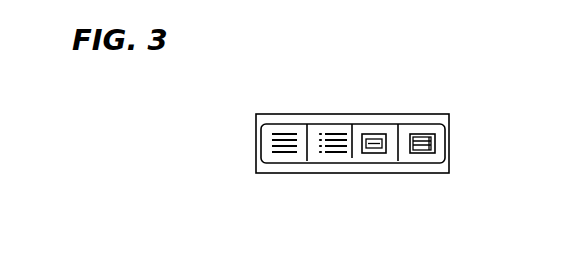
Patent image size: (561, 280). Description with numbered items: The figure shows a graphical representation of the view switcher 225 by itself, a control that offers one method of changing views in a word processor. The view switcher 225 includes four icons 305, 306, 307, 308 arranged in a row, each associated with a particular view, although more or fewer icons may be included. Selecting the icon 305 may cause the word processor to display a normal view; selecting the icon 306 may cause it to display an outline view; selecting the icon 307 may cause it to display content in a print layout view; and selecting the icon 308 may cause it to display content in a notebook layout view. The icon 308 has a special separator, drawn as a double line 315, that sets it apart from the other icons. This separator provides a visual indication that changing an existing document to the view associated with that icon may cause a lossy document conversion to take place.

The view switcher 225 is at (330, 92).
The double line 315 is at (399, 125).
The icon 305 is at (280, 163).
The icon 306 is at (327, 163).
The icon 307 is at (377, 163).
The icon 308 is at (422, 163).